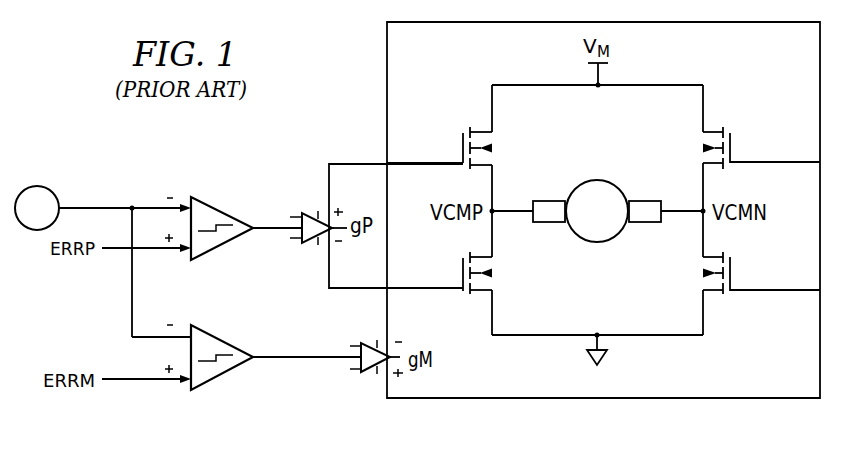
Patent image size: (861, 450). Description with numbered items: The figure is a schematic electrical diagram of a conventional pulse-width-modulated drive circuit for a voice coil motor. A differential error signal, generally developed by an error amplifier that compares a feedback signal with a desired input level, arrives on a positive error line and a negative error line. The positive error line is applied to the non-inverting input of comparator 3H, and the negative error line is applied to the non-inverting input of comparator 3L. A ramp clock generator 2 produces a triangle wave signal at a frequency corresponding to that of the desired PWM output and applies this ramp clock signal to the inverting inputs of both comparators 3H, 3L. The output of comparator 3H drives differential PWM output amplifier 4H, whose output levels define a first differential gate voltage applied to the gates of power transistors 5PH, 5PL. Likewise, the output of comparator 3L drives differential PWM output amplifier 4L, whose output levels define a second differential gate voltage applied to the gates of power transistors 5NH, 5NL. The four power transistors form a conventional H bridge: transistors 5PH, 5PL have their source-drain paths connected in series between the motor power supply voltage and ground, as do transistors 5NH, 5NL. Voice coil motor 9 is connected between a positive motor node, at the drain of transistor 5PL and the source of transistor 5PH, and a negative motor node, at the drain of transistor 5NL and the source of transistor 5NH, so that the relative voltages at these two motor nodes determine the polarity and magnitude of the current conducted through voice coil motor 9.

The ramp clock generator 2 is at (36, 186).
The comparator 3H is at (211, 205).
The comparator 3L is at (211, 381).
The differential PWM output amplifier 4H is at (314, 242).
The differential PWM output amplifier 4L is at (372, 375).
The power transistor 5PH is at (463, 145).
The power transistor 5PL is at (463, 270).
The power transistor 5NH is at (731, 145).
The power transistor 5NL is at (731, 271).
The voice coil motor 9 is at (597, 180).